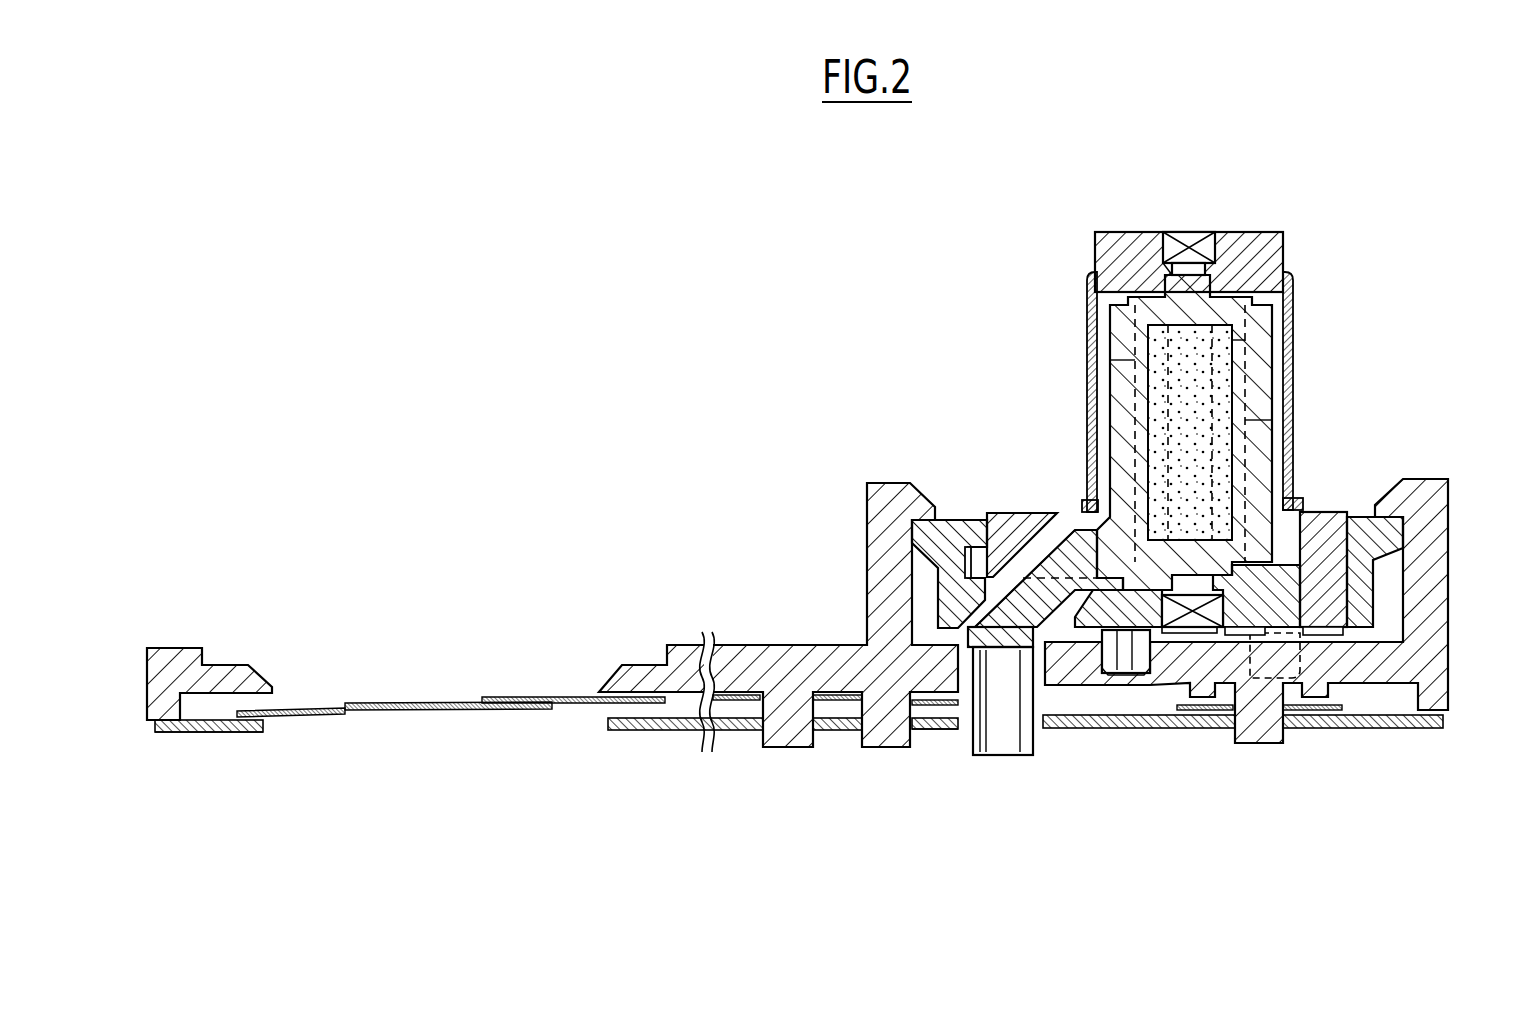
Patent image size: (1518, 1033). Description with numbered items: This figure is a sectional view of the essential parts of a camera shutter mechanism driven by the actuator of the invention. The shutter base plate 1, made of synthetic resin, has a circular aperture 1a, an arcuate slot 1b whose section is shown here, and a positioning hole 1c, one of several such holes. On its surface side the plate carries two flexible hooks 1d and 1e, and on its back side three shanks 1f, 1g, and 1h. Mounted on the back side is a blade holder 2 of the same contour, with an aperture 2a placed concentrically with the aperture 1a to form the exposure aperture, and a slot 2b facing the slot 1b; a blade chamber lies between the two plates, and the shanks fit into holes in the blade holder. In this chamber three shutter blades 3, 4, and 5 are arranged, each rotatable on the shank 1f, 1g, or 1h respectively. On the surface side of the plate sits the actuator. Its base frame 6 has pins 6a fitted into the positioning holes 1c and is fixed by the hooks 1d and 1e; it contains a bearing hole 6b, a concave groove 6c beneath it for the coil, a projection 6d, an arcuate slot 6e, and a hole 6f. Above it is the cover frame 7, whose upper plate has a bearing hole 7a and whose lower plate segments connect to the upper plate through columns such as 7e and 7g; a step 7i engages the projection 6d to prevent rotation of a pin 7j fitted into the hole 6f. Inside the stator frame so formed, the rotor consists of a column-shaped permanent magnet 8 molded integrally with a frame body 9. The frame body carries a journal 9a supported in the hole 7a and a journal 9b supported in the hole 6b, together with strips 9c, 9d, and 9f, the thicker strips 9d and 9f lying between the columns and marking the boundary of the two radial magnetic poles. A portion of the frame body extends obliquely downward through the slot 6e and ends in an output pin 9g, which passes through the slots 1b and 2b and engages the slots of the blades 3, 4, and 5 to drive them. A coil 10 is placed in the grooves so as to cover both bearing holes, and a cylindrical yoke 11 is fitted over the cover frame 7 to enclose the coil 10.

The shutter base plate 1 is at (736, 650).
The circular aperture 1a is at (276, 690).
The arcuate slot 1b is at (955, 700).
The positioning hole 1c is at (1145, 682).
The hook 1d is at (883, 520).
The hook 1e is at (1435, 558).
The shank 1f is at (790, 735).
The shank 1g is at (884, 735).
The shank 1h is at (1263, 727).
The blade holder 2 is at (668, 730).
The aperture 2a is at (268, 724).
The slot 2b is at (965, 728).
The shutter blade 3 is at (565, 697).
The shutter blade 4 is at (450, 702).
The shutter blade 5 is at (322, 708).
The base frame 6 is at (950, 526).
The pin 6a is at (1137, 658).
The bearing hole 6b is at (1207, 650).
The concave groove 6c is at (1172, 640).
The projection 6d is at (980, 522).
The arcuate slot 6e is at (987, 598).
The hole 6f is at (1325, 620).
The cover frame 7 is at (1110, 252).
The bearing hole 7a is at (1200, 258).
The column 7e is at (1100, 300).
The column 7g is at (1290, 298).
The step 7i is at (980, 572).
The pin 7j is at (1338, 620).
The permanent magnet 8 is at (1223, 472).
The frame body 9 is at (1260, 395).
The journal 9a is at (1172, 258).
The journal 9b is at (1198, 627).
The strip 9c is at (1227, 353).
The strip 9d is at (1265, 422).
The strip 9f is at (1118, 362).
The output pin 9g is at (1017, 728).
The coil 10 is at (1188, 240).
The cylindrical yoke 11 is at (1087, 412).